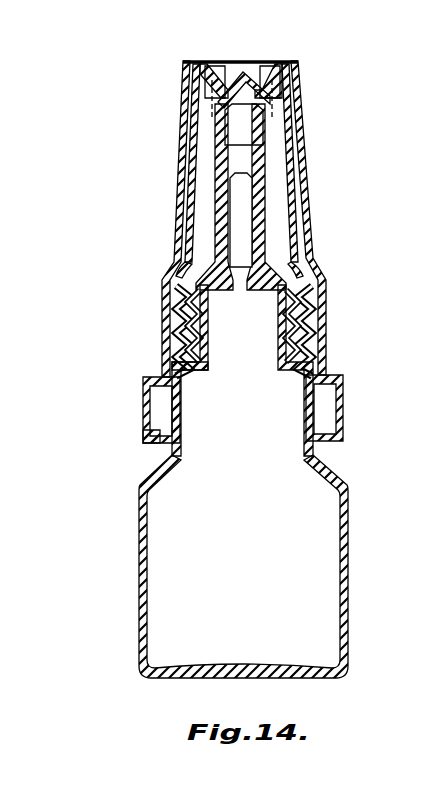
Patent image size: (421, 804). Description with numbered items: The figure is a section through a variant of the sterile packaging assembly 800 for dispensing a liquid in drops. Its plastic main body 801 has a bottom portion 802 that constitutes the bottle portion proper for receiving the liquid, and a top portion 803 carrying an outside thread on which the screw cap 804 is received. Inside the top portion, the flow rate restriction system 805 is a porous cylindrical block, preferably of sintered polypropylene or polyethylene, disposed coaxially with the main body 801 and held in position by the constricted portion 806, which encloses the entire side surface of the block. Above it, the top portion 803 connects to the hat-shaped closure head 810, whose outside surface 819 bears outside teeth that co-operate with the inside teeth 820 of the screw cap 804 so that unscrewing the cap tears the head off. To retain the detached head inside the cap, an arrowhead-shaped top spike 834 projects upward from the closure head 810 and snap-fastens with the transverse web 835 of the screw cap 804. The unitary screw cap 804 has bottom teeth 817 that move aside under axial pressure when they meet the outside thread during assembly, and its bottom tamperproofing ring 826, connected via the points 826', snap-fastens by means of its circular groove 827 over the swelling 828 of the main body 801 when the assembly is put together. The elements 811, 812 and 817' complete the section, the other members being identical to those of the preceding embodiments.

The packaging assembly 800 is at (241, 234).
The main body 801 is at (214, 481).
The bottom portion 802 is at (142, 514).
The top portion 803 is at (208, 310).
The screw cap 804 is at (176, 197).
The flow rate restriction system 805 is at (246, 208).
The constricted portion 806 is at (266, 240).
The closure head 810 is at (299, 62).
The nozzle 811 is at (288, 122).
The inner sleeve 812 is at (186, 166).
The bottom teeth 817 is at (201, 331).
The mating thread 817' is at (201, 326).
The outside surface 819 is at (183, 122).
The inside teeth 820 is at (184, 78).
The tamperproofing ring 826 is at (137, 399).
The points 826' is at (352, 382).
The circular groove 827 is at (146, 422).
The swelling 828 is at (184, 438).
The top spike 834 is at (250, 62).
The transverse web 835 is at (219, 62).